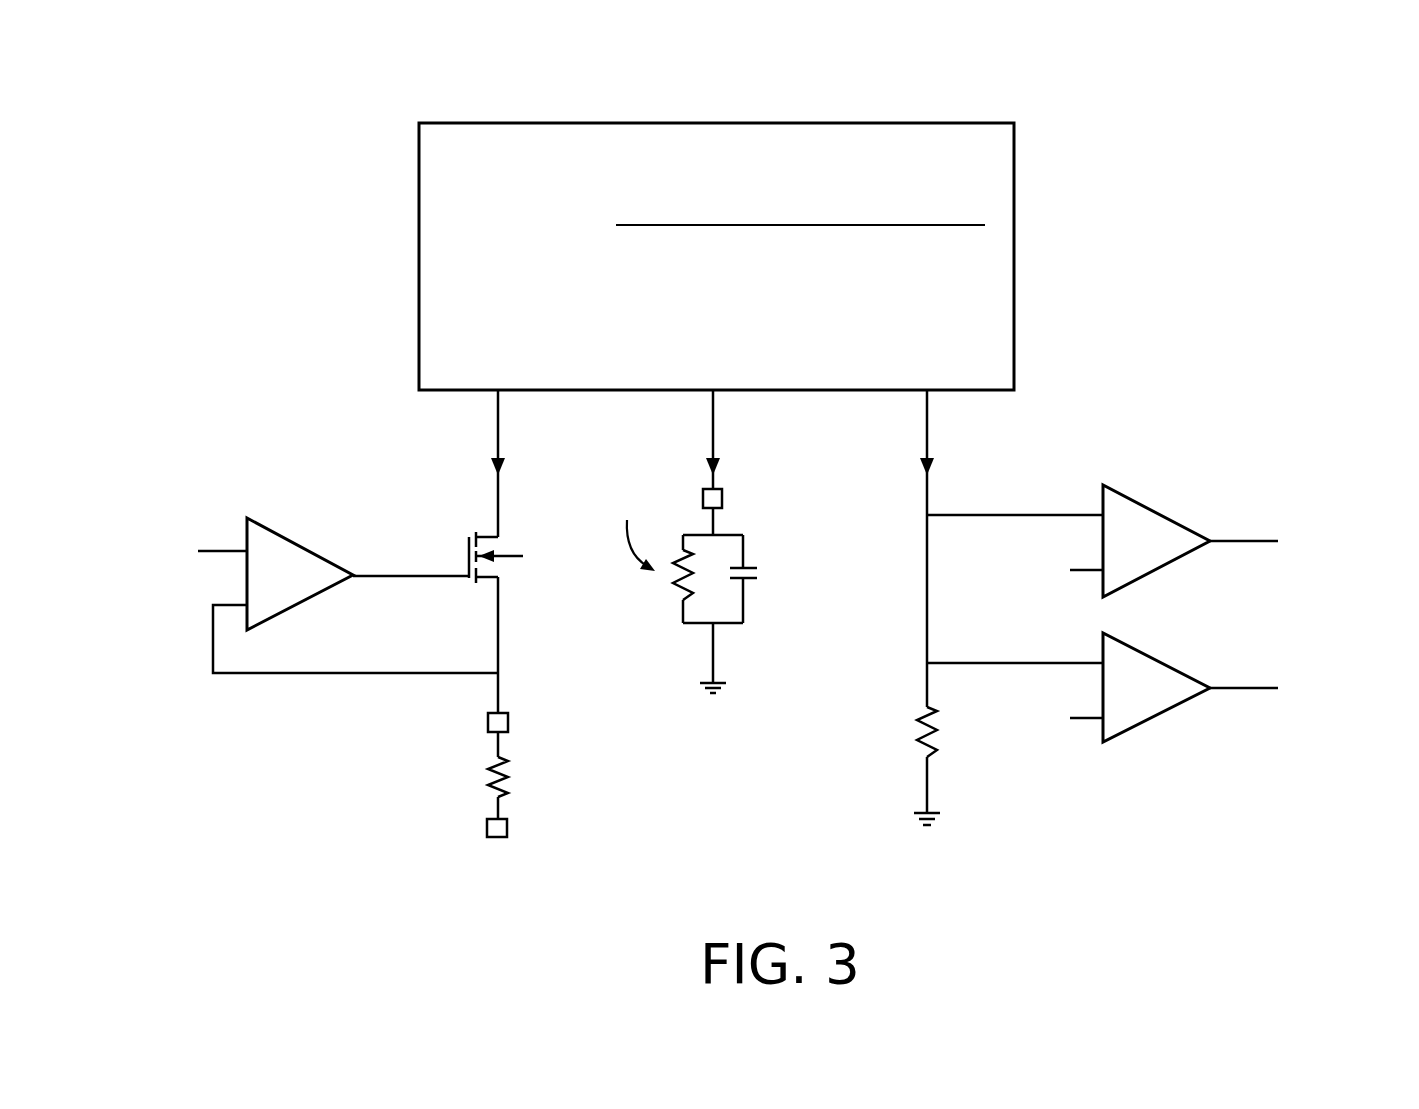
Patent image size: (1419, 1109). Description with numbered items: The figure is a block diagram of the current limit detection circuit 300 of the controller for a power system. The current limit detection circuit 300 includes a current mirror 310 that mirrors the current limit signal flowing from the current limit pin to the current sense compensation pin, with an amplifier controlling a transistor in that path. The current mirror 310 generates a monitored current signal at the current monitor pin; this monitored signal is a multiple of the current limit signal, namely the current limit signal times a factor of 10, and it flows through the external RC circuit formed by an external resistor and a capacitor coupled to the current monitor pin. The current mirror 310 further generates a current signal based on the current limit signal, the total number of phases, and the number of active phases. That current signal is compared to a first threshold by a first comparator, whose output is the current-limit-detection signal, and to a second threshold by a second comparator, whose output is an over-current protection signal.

The current limit detection circuit 300 is at (250, 146).
The current mirror 310 is at (718, 123).
The I_IMON scaling factor 10 is at (613, 319).